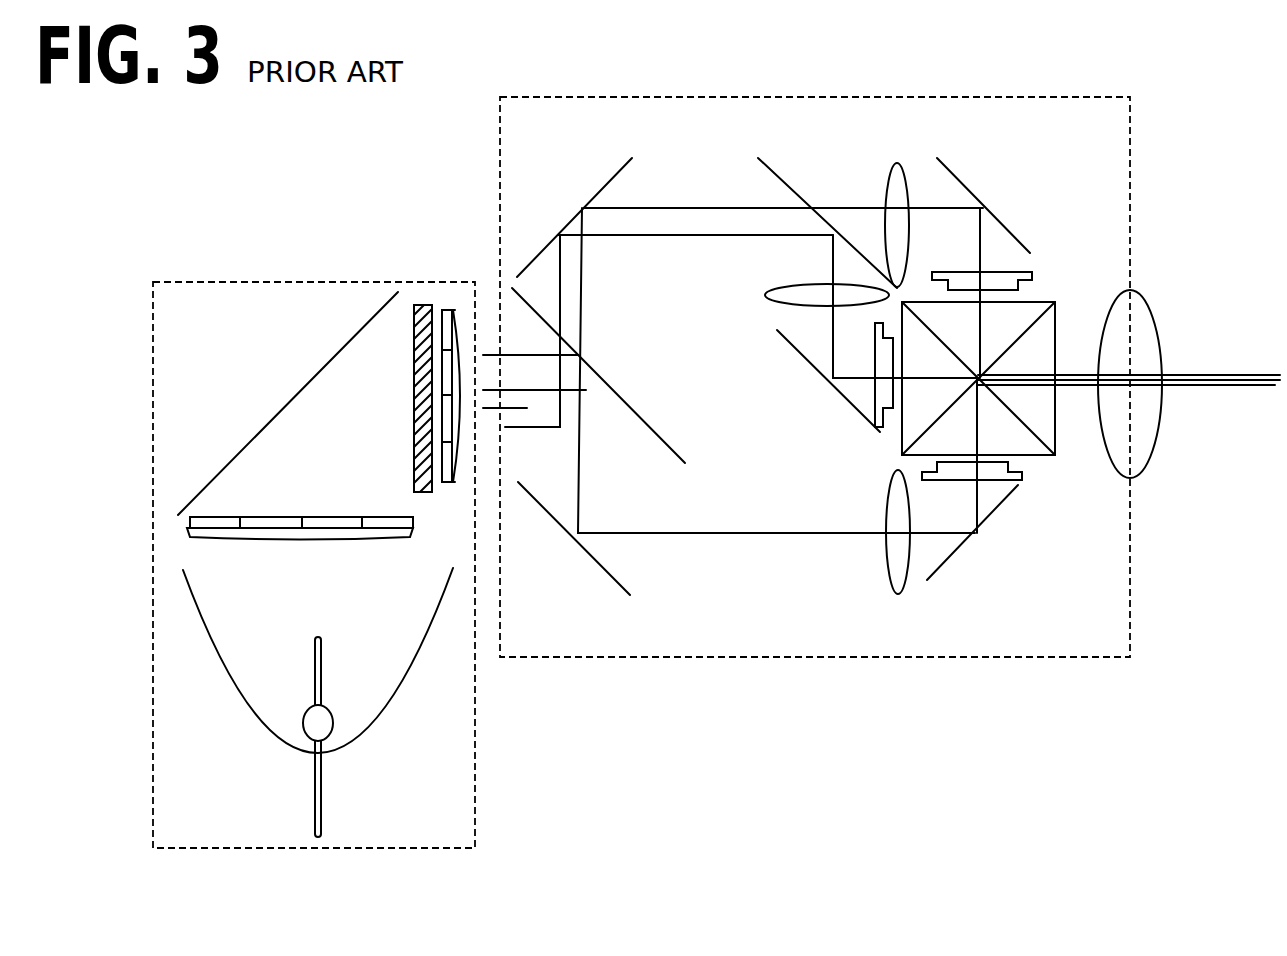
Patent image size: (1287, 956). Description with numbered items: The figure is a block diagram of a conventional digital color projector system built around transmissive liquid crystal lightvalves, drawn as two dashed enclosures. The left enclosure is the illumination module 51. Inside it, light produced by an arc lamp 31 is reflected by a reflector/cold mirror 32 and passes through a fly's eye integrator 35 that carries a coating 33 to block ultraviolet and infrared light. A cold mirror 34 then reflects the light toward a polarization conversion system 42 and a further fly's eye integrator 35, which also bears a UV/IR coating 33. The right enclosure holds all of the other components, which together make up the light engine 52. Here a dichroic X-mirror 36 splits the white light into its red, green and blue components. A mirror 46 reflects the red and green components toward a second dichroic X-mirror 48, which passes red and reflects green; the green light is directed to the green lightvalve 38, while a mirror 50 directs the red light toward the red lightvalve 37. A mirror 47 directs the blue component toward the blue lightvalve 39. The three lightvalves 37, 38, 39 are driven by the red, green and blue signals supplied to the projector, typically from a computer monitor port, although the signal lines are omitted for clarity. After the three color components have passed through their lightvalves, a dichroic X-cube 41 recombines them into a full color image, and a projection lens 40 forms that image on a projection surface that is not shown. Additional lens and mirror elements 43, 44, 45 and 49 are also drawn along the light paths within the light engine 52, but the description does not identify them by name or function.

The arc lamp 31 is at (322, 652).
The reflector/cold mirror 32 is at (246, 730).
The UV/IR coating 33 is at (205, 542).
The cold mirror 34 is at (327, 363).
The fly's eye integrator 35 is at (450, 482).
The dichroic X-mirror 36 is at (617, 395).
The red lightvalve 37 is at (1033, 277).
The green lightvalve 38 is at (877, 428).
The blue lightvalve 39 is at (942, 482).
The projection lens 40 is at (1152, 453).
The dichroic X-cube 41 is at (1037, 456).
The polarization conversion system 42 is at (414, 411).
The relay lens 43 is at (897, 162).
The relay lens 44 is at (767, 295).
The relay lens 45 is at (888, 568).
The mirror 46 is at (600, 180).
The mirror 47 is at (602, 572).
The dichroic X-mirror 48 is at (783, 175).
The reflecting mirror 49 is at (960, 540).
The mirror 50 is at (975, 190).
The illumination module 51 is at (153, 303).
The light engine 52 is at (1050, 96).